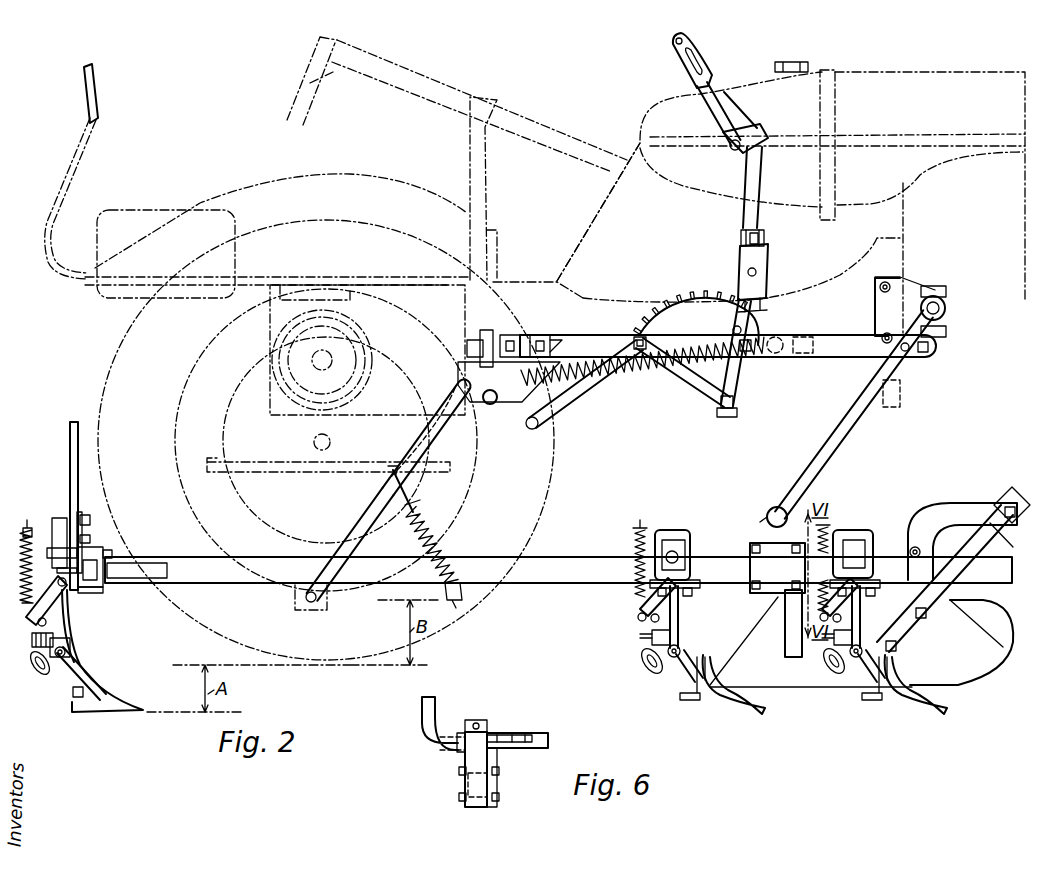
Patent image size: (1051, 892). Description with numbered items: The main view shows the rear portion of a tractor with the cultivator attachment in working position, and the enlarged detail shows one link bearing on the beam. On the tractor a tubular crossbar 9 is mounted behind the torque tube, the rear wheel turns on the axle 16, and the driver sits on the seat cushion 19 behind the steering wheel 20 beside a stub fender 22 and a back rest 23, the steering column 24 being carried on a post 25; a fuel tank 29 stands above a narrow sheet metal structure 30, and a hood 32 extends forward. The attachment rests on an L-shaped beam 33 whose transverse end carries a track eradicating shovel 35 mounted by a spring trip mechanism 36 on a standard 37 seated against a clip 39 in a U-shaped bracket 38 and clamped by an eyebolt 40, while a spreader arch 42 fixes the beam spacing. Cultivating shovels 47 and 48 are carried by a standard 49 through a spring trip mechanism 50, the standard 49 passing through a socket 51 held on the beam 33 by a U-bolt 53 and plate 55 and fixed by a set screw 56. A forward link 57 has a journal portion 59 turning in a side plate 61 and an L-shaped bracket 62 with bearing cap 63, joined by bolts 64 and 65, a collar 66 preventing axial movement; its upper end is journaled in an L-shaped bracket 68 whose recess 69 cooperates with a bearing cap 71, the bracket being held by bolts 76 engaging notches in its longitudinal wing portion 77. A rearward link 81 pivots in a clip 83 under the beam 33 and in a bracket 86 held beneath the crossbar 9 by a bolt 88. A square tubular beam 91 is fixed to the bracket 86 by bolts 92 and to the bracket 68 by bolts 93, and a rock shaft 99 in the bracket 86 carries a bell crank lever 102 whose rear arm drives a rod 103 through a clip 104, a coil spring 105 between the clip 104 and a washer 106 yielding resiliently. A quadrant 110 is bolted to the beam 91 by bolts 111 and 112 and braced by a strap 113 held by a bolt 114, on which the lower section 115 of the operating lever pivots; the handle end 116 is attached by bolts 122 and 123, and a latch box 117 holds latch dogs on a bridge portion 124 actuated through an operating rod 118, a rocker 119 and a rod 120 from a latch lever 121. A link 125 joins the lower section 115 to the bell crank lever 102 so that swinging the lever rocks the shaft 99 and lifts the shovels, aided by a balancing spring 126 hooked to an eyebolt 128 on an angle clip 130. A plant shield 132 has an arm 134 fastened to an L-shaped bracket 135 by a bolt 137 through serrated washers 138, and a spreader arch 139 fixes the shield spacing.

In FIG. 2, the tubular crossbar 9 is at (511, 334).
In FIG. 2, the axle 16 is at (331, 445).
In FIG. 2, the seat cushion 19 is at (142, 212).
In FIG. 2, the steering wheel 20 is at (298, 108).
In FIG. 2, the stub fender 22 is at (350, 176).
In FIG. 2, the back rest 23 is at (95, 93).
In FIG. 2, the steering column 24 is at (570, 138).
In FIG. 2, the post 25 is at (487, 192).
In FIG. 2, the fuel tank 29 is at (683, 106).
In FIG. 2, the sheet metal structure 30 is at (595, 220).
In FIG. 2, the hood 32 is at (895, 73).
In FIG. 2, the beam 33 is at (540, 575).
In FIG. 6, the beam 33 is at (490, 784).
In FIG. 2, the shovel 35 is at (110, 692).
In FIG. 2, the spring trip mechanism 36 is at (22, 590).
In FIG. 2, the standard 37 is at (52, 523).
In FIG. 2, the U-shaped bracket 38 is at (92, 591).
In FIG. 2, the clip 39 is at (78, 518).
In FIG. 2, the eyebolt 40 is at (92, 548).
In FIG. 2, the spreader arch 42 is at (70, 433).
In FIG. 2, the shovel 47 is at (744, 702).
In FIG. 2, the shovel 48 is at (920, 703).
In FIG. 2, the standard 49 is at (682, 608).
In FIG. 2, the spring trip mechanism 50 is at (650, 647).
In FIG. 2, the socket 51 is at (688, 541).
In FIG. 2, the U-bolt 53 is at (659, 530).
In FIG. 2, the plate 55 is at (700, 585).
In FIG. 2, the set screw 56 is at (680, 557).
In FIG. 2, the forward link 57 is at (860, 416).
In FIG. 6, the forward link 57 is at (420, 715).
In FIG. 6, the journal portion 59 is at (548, 739).
In FIG. 2, the side plate 61 is at (752, 566).
In FIG. 6, the side plate 61 is at (463, 764).
In FIG. 6, the L-shaped bracket 62 is at (498, 762).
In FIG. 6, the bearing cap 63 is at (510, 734).
In FIG. 2, the bolt 64 is at (754, 544).
In FIG. 6, the bolt 64 is at (458, 772).
In FIG. 2, the bolt 65 is at (755, 590).
In FIG. 6, the bolt 65 is at (458, 799).
In FIG. 2, the collar 66 is at (776, 507).
In FIG. 6, the collar 66 is at (476, 720).
In FIG. 2, the L-shaped bracket 68 is at (920, 280).
In FIG. 2, the semicylindrical recess 69 is at (921, 308).
In FIG. 2, the bearing cap 71 is at (946, 309).
In FIG. 2, the bolts 76 is at (879, 287).
In FIG. 2, the longitudinal wing portion 77 is at (875, 312).
In FIG. 2, the rearward link 81 is at (364, 535).
In FIG. 2, the clip 83 is at (311, 607).
In FIG. 2, the bracket 86 is at (486, 406).
In FIG. 2, the bolt 88 is at (485, 330).
In FIG. 2, the square tubular beam 91 is at (598, 337).
In FIG. 2, the bolts 92 is at (541, 334).
In FIG. 2, the bolts 93 is at (918, 355).
In FIG. 2, the rock shaft 99 is at (498, 406).
In FIG. 2, the bell crank lever 102 is at (412, 450).
In FIG. 2, the rod 103 is at (412, 497).
In FIG. 2, the clip 104 is at (470, 598).
In FIG. 2, the coil spring 105 is at (442, 548).
In FIG. 2, the washer 106 is at (422, 510).
In FIG. 2, the quadrant 110 is at (681, 306).
In FIG. 2, the bolt 111 is at (640, 336).
In FIG. 2, the bolt 112 is at (752, 343).
In FIG. 2, the strap 113 is at (690, 390).
In FIG. 2, the bolt 114 is at (735, 405).
In FIG. 2, the lower section 115 is at (735, 325).
In FIG. 2, the handle end 116 is at (837, 126).
In FIG. 2, the latch box 117 is at (767, 266).
In FIG. 2, the operating rod 118 is at (761, 156).
In FIG. 2, the rocker 119 is at (766, 131).
In FIG. 2, the rod 120 is at (728, 101).
In FIG. 2, the latch lever 121 is at (708, 56).
In FIG. 2, the bolt 122 is at (766, 302).
In FIG. 2, the bolt 123 is at (762, 241).
In FIG. 2, the bridge portion 124 is at (741, 233).
In FIG. 2, the link 125 is at (599, 392).
In FIG. 2, the balancing spring 126 is at (666, 382).
In FIG. 2, the eyebolt 128 is at (777, 355).
In FIG. 2, the angle clip 130 is at (806, 356).
In FIG. 2, the plant shield 132 is at (975, 652).
In FIG. 2, the arm 134 is at (985, 570).
In FIG. 2, the L-shaped bracket 135 is at (961, 505).
In FIG. 2, the bolt 137 is at (1008, 500).
In FIG. 2, the serrated washers 138 is at (1003, 533).
In FIG. 2, the spreader arch 139 is at (791, 618).